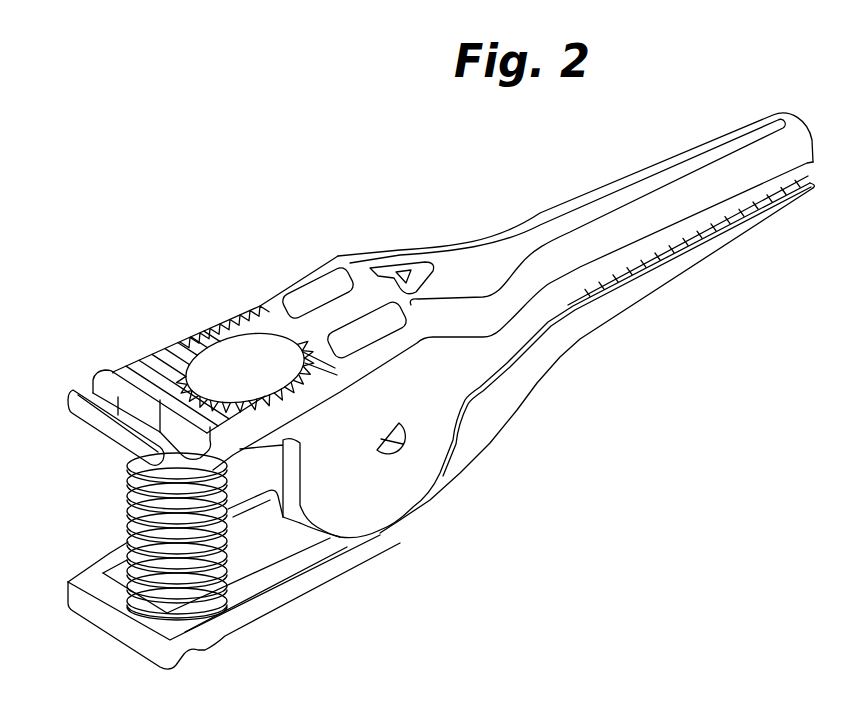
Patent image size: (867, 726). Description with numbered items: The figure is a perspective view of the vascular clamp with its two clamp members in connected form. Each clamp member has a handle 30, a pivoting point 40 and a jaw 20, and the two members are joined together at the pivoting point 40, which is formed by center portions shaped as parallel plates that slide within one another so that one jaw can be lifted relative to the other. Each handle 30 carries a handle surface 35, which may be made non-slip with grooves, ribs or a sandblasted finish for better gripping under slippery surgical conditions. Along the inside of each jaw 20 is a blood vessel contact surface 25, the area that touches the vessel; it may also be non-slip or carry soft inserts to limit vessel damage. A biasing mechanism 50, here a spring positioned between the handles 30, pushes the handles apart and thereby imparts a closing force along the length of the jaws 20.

The jaw 20 is at (714, 143).
The blood vessel contact surface 25 is at (752, 200).
The handle 30 is at (103, 380).
The handle surface 35 is at (230, 356).
The pivoting point 40 is at (404, 481).
The biasing mechanism 50 is at (128, 515).